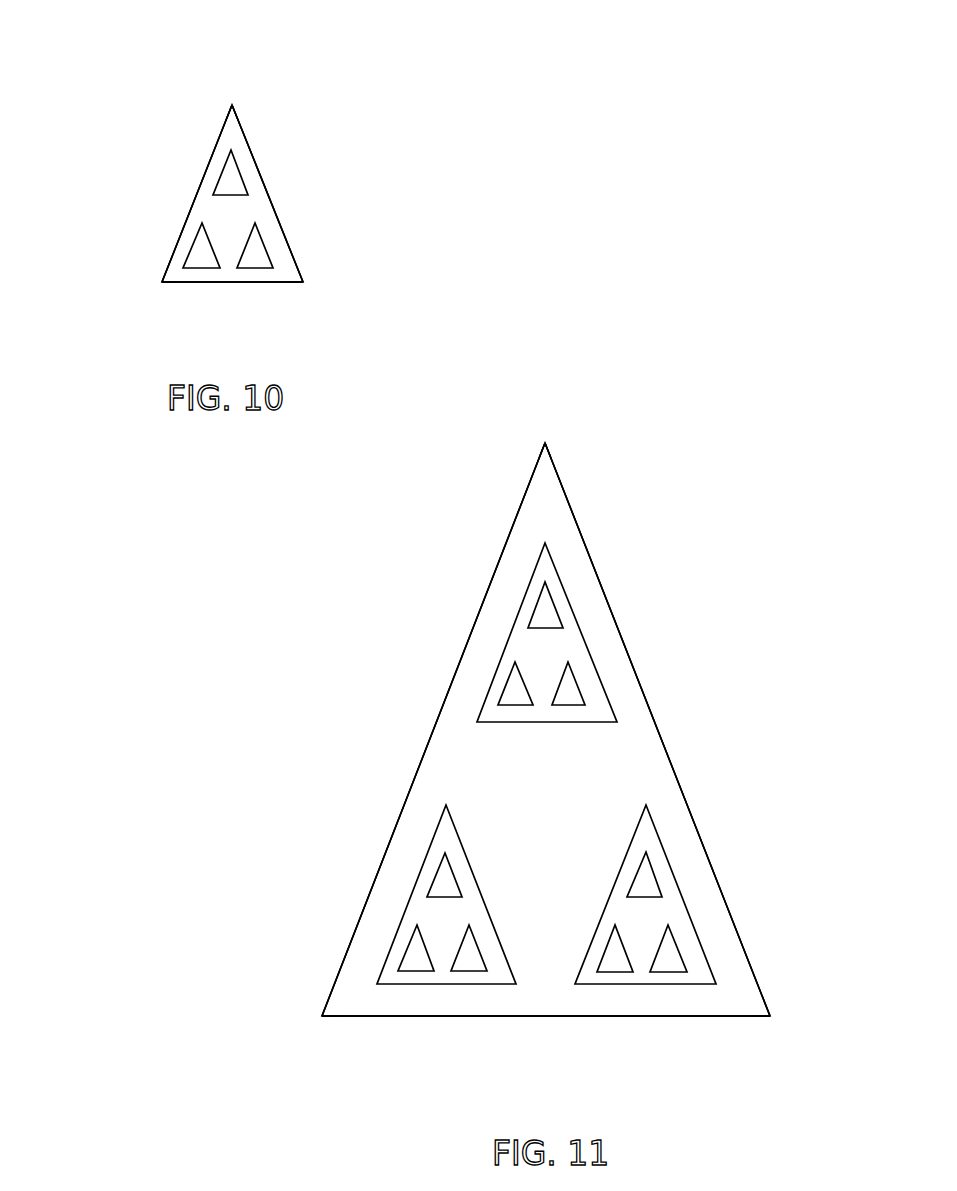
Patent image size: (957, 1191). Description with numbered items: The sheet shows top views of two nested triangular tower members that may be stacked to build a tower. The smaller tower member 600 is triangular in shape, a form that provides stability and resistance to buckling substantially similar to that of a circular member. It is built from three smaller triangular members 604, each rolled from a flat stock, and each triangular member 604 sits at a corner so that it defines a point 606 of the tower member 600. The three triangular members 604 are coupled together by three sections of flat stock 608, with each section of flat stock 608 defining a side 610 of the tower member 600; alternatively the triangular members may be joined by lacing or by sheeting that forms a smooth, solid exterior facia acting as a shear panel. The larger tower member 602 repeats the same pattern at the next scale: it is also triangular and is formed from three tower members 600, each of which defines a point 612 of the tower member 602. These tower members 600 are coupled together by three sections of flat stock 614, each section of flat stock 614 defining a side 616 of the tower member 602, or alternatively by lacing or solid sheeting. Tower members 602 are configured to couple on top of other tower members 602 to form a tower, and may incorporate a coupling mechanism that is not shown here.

In FIG. 10, the tower member 600 is at (272, 38).
In FIG. 11, the tower member 600 is at (522, 655).
In FIG. 11, the tower member 602 is at (623, 410).
In FIG. 10, the triangular member 604 is at (233, 181).
In FIG. 11, the triangular member 604 is at (543, 612).
In FIG. 10, the point 606 is at (224, 91).
In FIG. 10, the section of flat stock 608 is at (200, 182).
In FIG. 10, the side 610 is at (183, 223).
In FIG. 11, the point 612 is at (537, 423).
In FIG. 11, the section of flat stock 614 is at (633, 662).
In FIG. 11, the side 616 is at (667, 742).